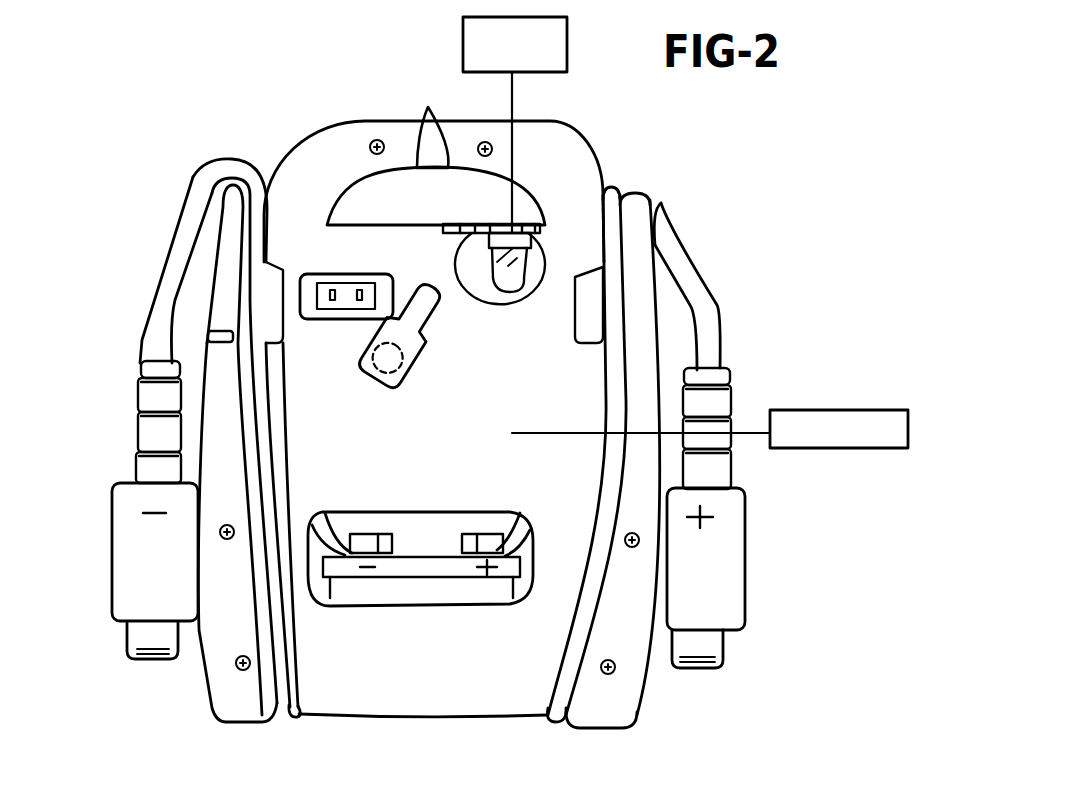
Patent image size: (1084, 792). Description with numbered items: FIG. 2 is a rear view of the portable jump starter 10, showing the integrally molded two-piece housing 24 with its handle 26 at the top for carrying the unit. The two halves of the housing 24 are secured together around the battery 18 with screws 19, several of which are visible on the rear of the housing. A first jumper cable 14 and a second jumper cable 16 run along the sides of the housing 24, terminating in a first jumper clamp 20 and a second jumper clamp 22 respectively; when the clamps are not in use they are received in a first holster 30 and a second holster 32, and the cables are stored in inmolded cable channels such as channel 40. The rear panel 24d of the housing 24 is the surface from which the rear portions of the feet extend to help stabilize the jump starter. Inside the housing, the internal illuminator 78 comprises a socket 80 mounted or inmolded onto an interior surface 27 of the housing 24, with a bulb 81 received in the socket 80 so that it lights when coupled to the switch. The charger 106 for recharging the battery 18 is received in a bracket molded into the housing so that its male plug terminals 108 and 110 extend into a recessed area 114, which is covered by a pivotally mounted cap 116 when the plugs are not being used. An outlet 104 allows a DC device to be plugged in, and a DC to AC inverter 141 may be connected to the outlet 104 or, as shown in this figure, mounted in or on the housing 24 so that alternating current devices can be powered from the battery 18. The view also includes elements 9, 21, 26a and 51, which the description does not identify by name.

The battery pack unit 9 is at (430, 520).
The portable jump starter 10 is at (727, 261).
The first jumper cable 14 is at (618, 208).
The second jumper cable 16 is at (192, 200).
The battery 18 is at (430, 595).
The screws 19 is at (371, 142).
The first jumper clamp 20 is at (707, 658).
The right cable 21 is at (645, 373).
The second jumper clamp 22 is at (155, 650).
The housing 24 is at (205, 370).
The rear panel 24d is at (565, 404).
The handle 26 is at (377, 118).
The light pipe 26a is at (434, 124).
The interior surface 27 is at (466, 225).
The first holster 30 is at (742, 523).
The second holster 32 is at (113, 487).
The cable channel 40 is at (220, 328).
The strobe circuit 51 is at (457, 43).
The internal illuminator 78 is at (489, 272).
The socket 80 is at (533, 223).
The bulb 81 is at (513, 288).
The outlet 104 is at (410, 368).
The charger 106 is at (327, 274).
The male plug terminal 108 is at (360, 302).
The male plug terminal 110 is at (328, 303).
The recessed area 114 is at (380, 274).
The cap 116 is at (402, 380).
The DC to AC inverter 141 is at (832, 408).